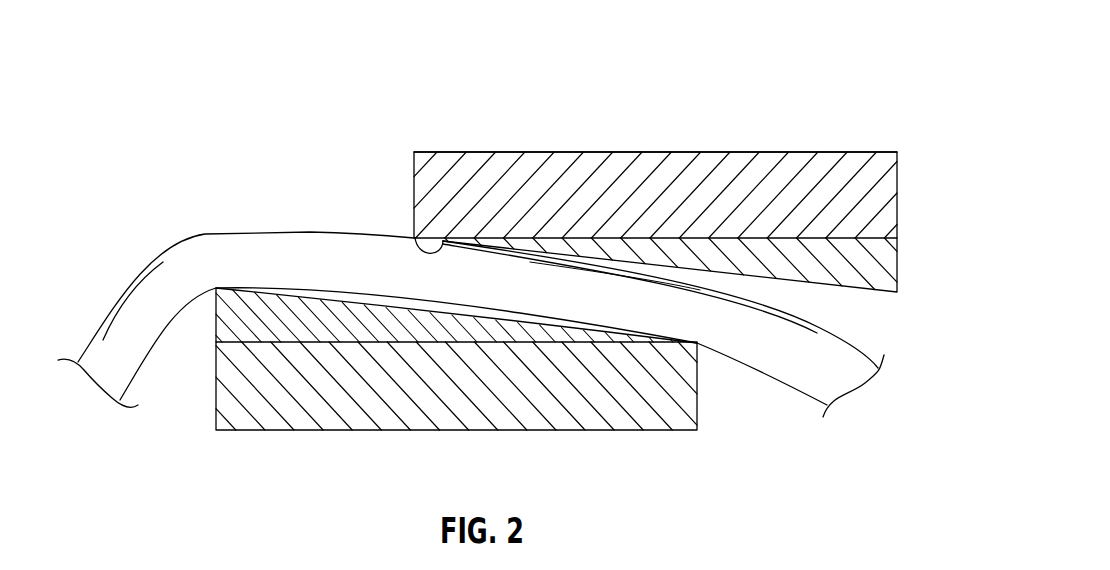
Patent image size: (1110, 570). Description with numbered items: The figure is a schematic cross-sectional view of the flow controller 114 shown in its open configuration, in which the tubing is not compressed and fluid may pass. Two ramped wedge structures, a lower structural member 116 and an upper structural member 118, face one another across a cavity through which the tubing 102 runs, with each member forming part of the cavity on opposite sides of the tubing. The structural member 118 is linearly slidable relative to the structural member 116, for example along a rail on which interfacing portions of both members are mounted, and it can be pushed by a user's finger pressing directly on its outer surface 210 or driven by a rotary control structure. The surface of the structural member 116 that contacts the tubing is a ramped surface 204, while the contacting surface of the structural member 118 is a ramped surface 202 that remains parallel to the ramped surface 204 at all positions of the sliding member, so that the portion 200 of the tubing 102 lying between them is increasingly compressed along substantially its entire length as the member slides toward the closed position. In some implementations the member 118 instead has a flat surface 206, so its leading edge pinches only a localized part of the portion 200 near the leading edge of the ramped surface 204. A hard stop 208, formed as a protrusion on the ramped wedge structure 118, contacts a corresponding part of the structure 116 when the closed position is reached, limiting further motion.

The tubing 102 is at (788, 358).
The flow controller 114 is at (810, 47).
The structural member 116 is at (425, 407).
The structural member 118 is at (674, 166).
The portion of tubing 200 is at (260, 228).
The ramped surface 202 is at (887, 293).
The ramped surface 204 is at (242, 288).
The flat surface 206 is at (897, 257).
The hard stop 208 is at (412, 240).
The outer surface 210 is at (826, 152).